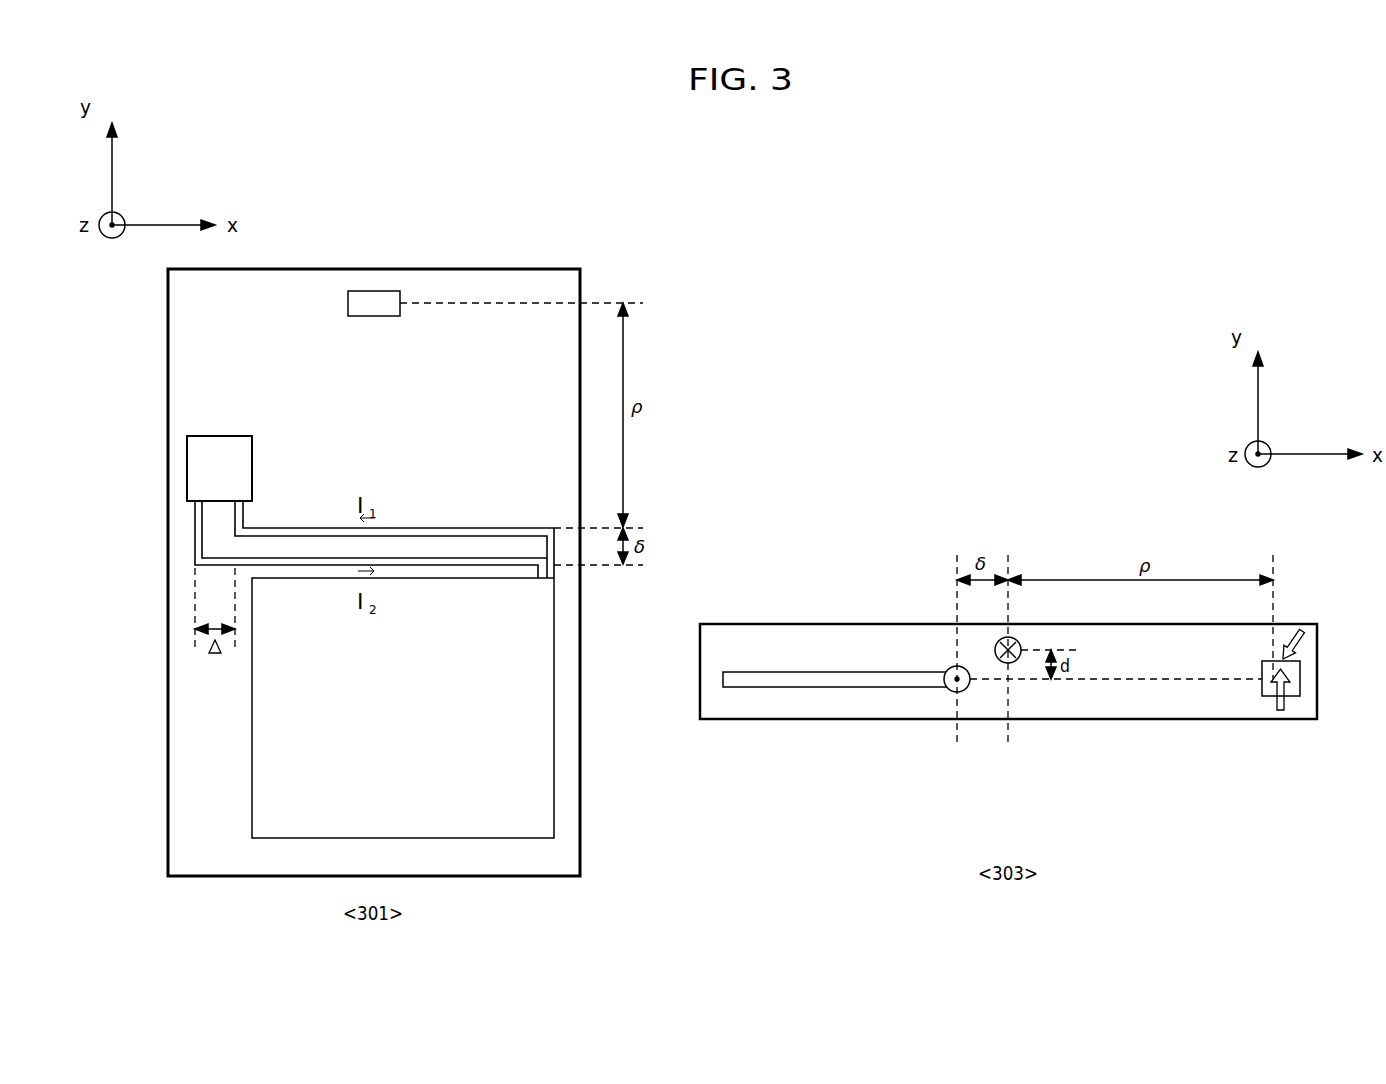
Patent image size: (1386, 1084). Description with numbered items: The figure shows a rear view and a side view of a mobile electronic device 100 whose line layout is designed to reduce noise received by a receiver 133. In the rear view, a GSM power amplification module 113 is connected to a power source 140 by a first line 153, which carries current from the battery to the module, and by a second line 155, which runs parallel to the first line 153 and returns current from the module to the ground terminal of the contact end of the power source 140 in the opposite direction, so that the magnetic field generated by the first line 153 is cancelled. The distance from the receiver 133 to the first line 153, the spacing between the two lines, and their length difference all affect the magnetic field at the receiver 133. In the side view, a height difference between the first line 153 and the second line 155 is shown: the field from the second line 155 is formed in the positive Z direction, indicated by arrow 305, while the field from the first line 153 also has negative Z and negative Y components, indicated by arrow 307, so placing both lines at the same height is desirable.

The mobile electronic device 100 is at (522, 269).
The GSM power amplification module 113 is at (198, 466).
The receiver 133 is at (372, 300).
The power source 140 is at (537, 713).
The first line 153 is at (459, 529).
The second line 155 is at (423, 560).
The arrow 305 is at (1284, 708).
The arrow 307 is at (1305, 633).